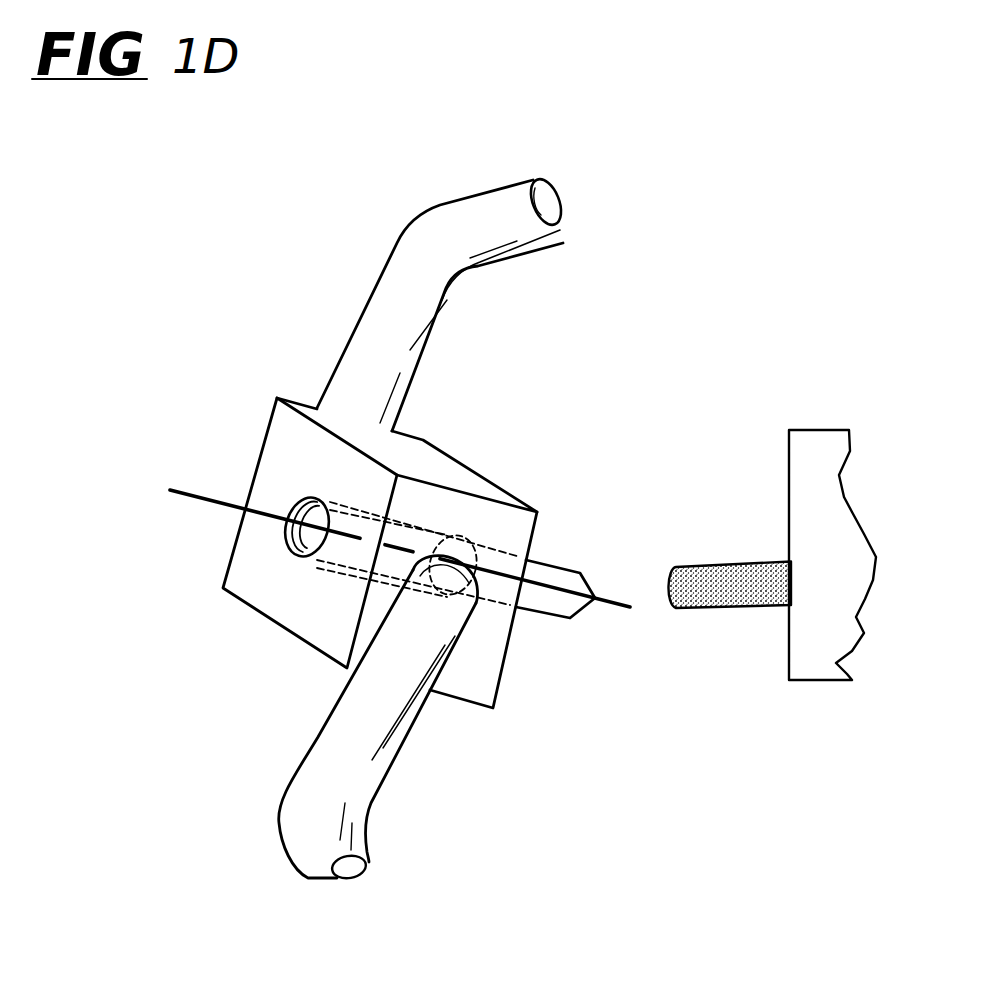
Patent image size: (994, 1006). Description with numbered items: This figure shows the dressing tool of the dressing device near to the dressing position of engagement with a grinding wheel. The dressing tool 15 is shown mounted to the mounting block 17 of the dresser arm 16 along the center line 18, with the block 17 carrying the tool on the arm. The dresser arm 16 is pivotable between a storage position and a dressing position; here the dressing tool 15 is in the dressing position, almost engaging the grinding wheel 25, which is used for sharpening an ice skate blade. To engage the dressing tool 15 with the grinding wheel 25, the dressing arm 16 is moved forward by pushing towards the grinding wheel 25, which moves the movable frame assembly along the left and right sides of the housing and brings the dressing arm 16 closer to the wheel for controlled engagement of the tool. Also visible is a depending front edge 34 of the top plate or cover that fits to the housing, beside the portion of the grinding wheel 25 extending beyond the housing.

The dressing tool 15 is at (543, 617).
The dresser arm 16 is at (337, 743).
The mounting block 17 is at (300, 587).
The center line 18 is at (199, 492).
The grinding wheel 25 is at (719, 562).
The depending front edge 34 is at (812, 646).